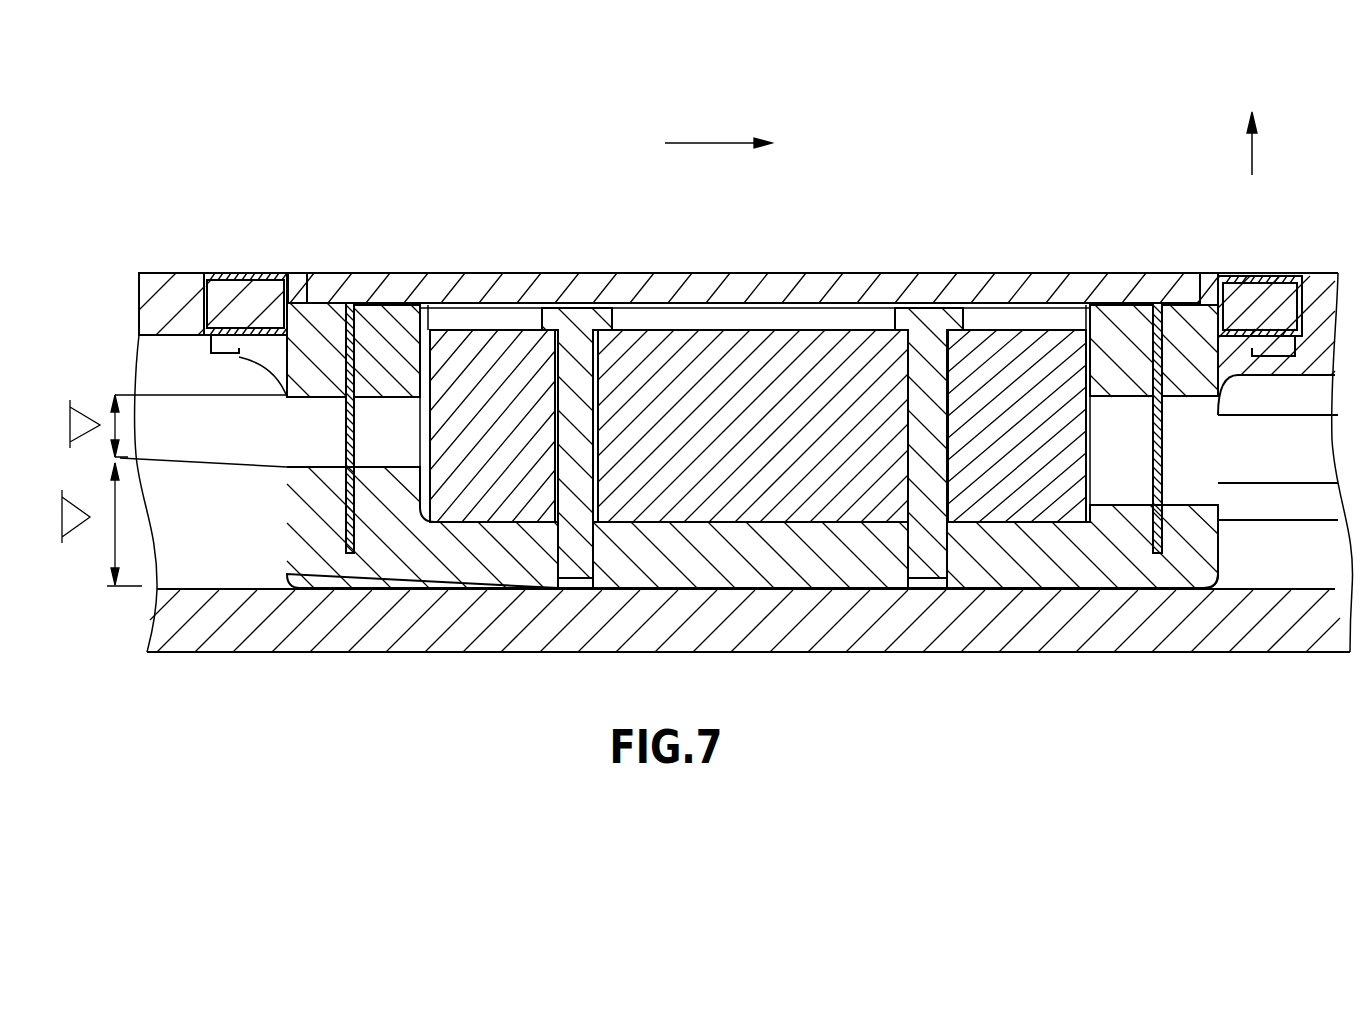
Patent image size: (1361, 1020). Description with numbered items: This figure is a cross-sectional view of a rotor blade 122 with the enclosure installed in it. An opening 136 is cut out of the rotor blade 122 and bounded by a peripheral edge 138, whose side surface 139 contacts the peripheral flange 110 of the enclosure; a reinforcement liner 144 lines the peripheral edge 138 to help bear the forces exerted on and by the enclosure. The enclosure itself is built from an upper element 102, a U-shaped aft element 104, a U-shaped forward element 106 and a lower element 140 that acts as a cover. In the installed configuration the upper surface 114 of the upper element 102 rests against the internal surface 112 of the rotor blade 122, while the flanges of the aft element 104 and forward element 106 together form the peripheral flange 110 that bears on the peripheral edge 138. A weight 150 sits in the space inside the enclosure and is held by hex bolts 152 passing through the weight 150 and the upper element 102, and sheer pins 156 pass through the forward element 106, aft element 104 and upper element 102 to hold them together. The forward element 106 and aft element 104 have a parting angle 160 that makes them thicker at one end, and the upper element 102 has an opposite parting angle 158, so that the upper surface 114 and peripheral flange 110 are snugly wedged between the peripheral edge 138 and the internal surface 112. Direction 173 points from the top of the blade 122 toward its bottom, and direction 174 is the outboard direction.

The upper element 102 is at (237, 592).
The aft element 104 is at (388, 460).
The forward element 106 is at (385, 320).
The peripheral flange 110 is at (236, 347).
The internal surface 112 is at (1232, 583).
The upper surface 114 is at (890, 535).
The rotor blade 122 is at (1078, 652).
The opening 136 is at (297, 273).
The peripheral edge 138 is at (200, 333).
The side surface 139 is at (239, 357).
The lower element 140 is at (515, 273).
The reinforcement liner 144 is at (330, 293).
The weight 150 is at (680, 330).
The hex bolts 152 is at (560, 560).
The sheer pins 156 is at (349, 553).
The parting angle 158 is at (57, 513).
The parting angle 160 is at (62, 418).
The direction from top to bottom of blade 173 is at (1253, 160).
The outboard direction 174 is at (692, 143).